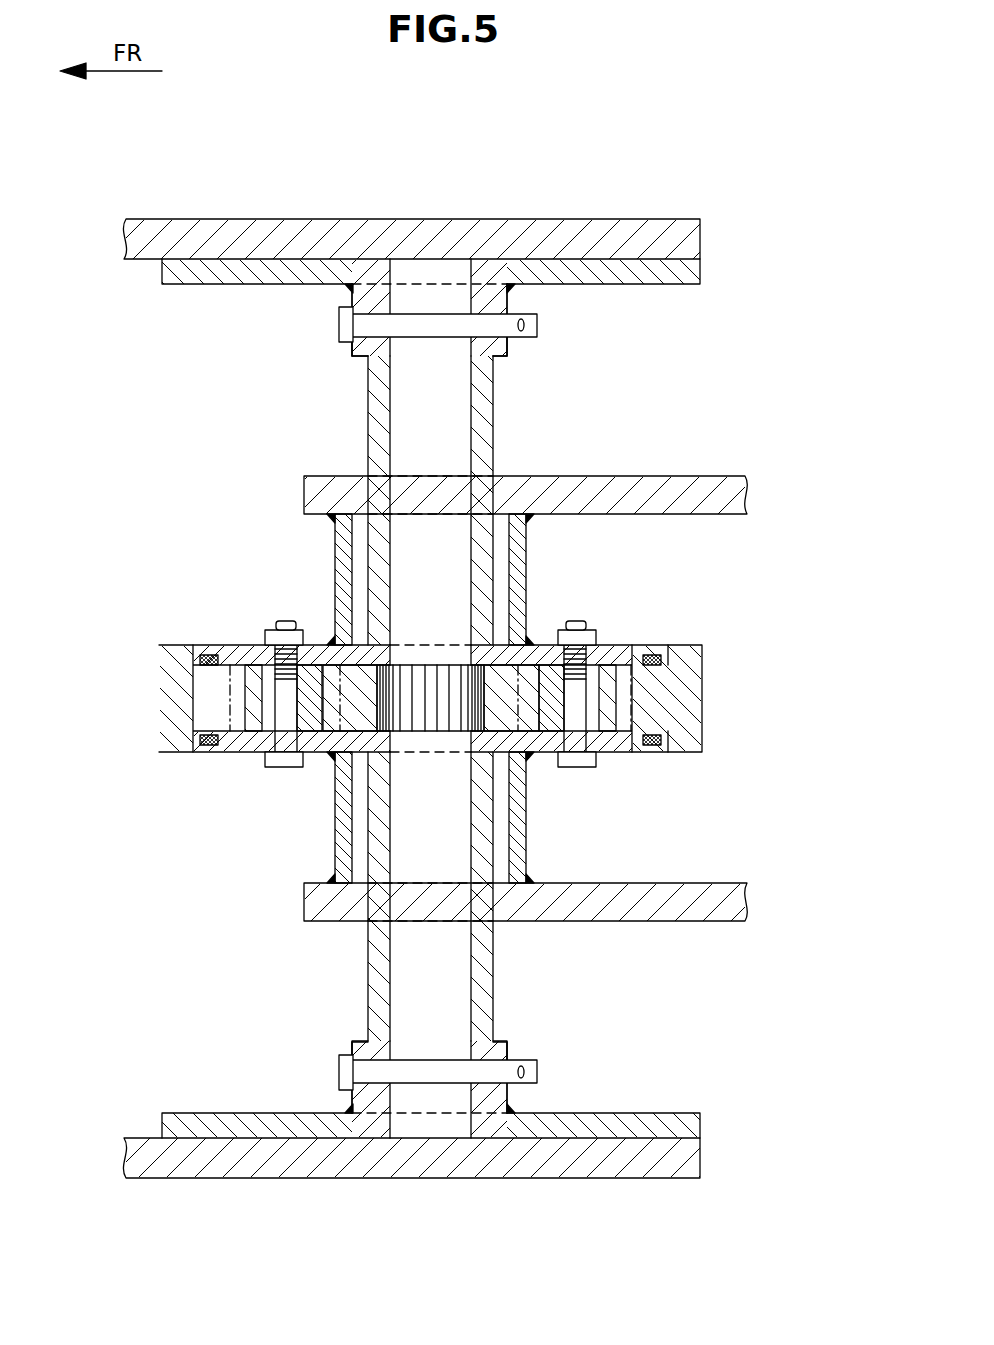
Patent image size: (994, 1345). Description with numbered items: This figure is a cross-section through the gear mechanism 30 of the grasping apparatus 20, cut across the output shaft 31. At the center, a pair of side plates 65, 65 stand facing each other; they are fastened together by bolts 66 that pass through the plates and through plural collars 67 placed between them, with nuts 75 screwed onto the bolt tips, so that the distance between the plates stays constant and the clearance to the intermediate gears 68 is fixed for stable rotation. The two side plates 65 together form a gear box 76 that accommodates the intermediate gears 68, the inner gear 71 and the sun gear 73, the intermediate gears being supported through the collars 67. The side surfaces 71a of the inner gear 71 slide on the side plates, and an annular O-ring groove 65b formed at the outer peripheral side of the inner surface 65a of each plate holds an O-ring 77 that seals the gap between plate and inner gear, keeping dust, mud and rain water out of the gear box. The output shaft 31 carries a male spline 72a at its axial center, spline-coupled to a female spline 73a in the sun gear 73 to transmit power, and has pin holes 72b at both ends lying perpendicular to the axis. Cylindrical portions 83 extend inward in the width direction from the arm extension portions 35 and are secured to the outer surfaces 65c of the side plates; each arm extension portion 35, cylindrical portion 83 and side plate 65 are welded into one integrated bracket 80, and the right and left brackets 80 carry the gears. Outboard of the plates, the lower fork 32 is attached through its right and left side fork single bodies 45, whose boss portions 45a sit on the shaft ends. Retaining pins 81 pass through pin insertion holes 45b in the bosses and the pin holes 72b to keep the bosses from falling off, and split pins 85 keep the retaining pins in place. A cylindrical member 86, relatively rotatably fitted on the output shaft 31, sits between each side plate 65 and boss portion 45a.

The grasping apparatus 20 is at (320, 190).
The gear mechanism 30 is at (159, 680).
The output shaft 31 is at (445, 290).
The lower fork 32 is at (205, 217).
The arm extension portion 35 is at (745, 495).
The side fork single body 45 is at (580, 240).
The boss portion 45a is at (495, 300).
The pin insertion hole 45b is at (375, 337).
The side plate 65 is at (225, 662).
The inner surface 65a is at (205, 656).
The O-ring groove 65b is at (652, 656).
The outer surface 65c is at (528, 640).
The bolt 66 is at (285, 770).
The collar 67 is at (250, 668).
The intermediate gear 68 is at (230, 690).
The inner gear 71 is at (703, 752).
The side surface 71a is at (233, 648).
The male spline 72a is at (430, 712).
The pin hole 72b is at (420, 318).
The sun gear 73 is at (500, 690).
The female spline 73a is at (455, 690).
The nut 75 is at (285, 628).
The gear box 76 is at (213, 755).
The O-ring 77 is at (665, 666).
The bracket 80 is at (625, 548).
The retaining pin 81 is at (338, 323).
The cylindrical portion 83 is at (340, 525).
The split pin 85 is at (540, 322).
The cylindrical member 86 is at (372, 455).